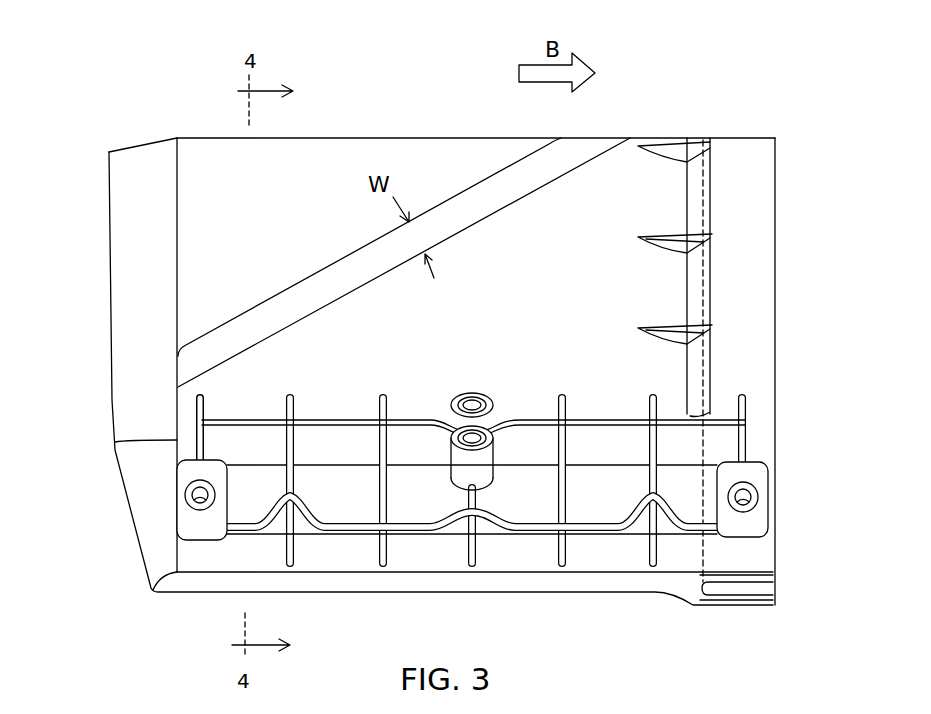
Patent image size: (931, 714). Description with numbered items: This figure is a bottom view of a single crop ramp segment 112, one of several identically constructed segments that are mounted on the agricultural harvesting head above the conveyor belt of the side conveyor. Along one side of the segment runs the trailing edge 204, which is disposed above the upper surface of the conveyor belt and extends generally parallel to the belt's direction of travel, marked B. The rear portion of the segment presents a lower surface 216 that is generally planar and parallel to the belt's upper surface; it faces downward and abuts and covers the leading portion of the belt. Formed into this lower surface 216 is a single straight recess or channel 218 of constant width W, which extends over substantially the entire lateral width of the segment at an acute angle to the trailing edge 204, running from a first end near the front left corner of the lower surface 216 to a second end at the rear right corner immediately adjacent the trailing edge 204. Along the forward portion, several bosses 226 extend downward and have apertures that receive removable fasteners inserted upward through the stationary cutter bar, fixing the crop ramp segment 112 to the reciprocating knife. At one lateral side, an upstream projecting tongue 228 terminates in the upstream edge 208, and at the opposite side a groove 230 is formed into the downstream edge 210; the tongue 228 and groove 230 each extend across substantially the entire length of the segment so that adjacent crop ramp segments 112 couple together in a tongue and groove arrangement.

The crop ramp segment 112 is at (667, 60).
The trailing edge 204 is at (450, 137).
The upstream edge 208 is at (110, 326).
The downstream edge 210 is at (780, 296).
The lower surface 216 is at (262, 219).
The recess or channel 218 is at (360, 268).
The bosses 226 is at (478, 392).
The upstream projecting tongue 228 is at (142, 235).
The groove 230 is at (703, 212).